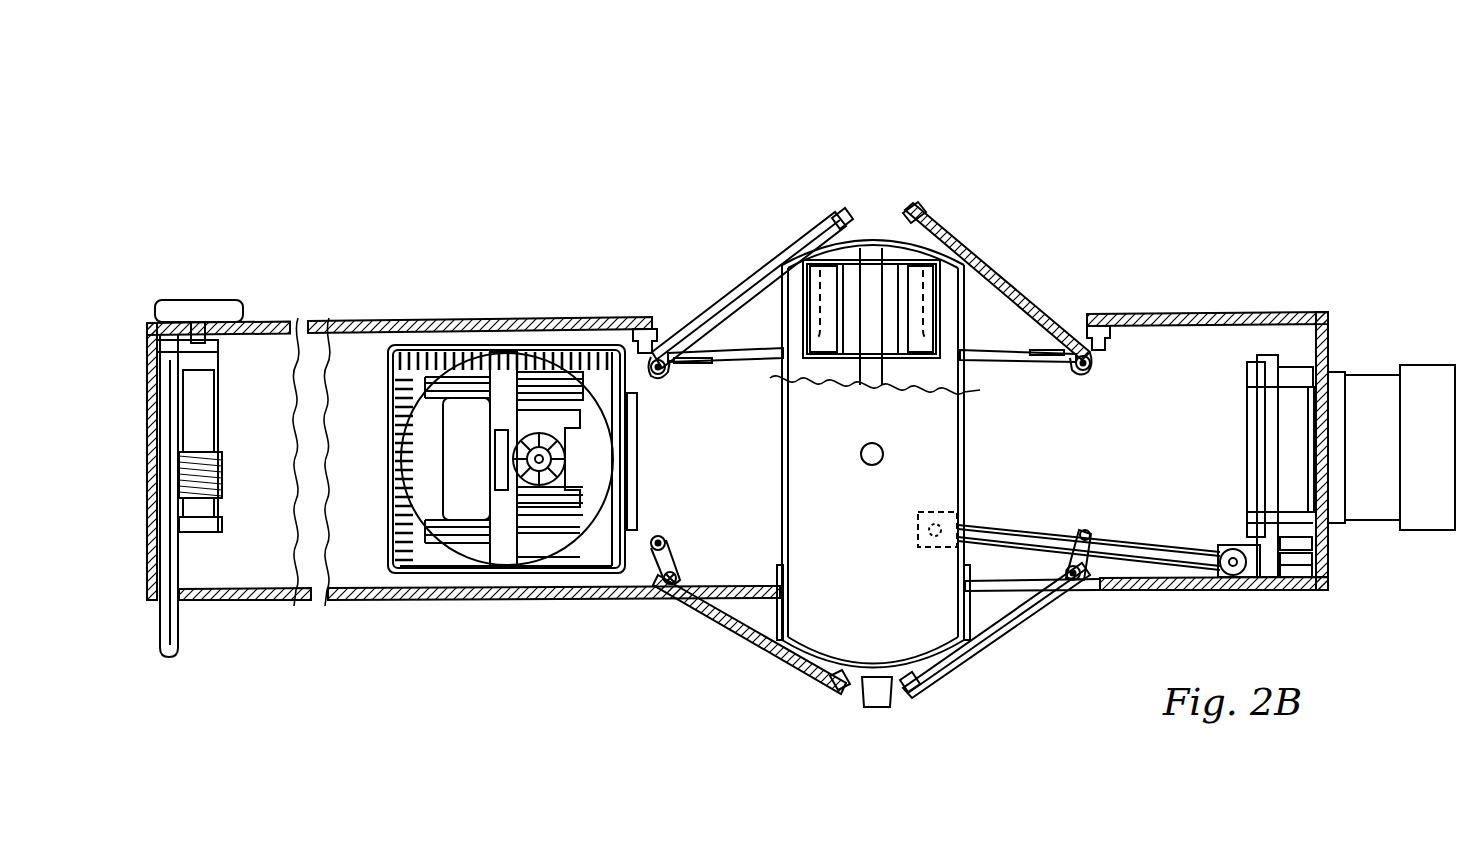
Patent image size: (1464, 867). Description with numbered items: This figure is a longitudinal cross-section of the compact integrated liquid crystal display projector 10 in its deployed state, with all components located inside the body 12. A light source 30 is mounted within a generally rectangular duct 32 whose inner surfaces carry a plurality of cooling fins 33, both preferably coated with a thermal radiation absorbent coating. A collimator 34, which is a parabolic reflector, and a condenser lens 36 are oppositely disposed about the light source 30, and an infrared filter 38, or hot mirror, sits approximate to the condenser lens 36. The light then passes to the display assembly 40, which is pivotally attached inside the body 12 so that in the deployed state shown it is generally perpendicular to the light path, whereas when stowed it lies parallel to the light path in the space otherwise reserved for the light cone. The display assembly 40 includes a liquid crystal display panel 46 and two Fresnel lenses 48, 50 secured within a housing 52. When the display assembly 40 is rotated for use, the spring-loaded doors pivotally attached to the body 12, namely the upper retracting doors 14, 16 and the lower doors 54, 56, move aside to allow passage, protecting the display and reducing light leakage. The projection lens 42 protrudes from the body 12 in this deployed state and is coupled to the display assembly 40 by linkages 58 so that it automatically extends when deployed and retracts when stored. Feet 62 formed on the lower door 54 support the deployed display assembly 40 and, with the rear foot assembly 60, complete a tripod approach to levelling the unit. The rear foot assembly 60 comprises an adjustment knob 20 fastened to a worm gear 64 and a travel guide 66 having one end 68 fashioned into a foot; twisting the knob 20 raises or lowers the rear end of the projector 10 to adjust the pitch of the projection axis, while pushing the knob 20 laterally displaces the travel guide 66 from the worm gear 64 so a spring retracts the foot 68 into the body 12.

The compact integrated liquid crystal display projector 10 is at (446, 260).
The body 12 is at (387, 322).
The upper retracting door 14 is at (729, 290).
The upper retracting door 16 is at (1010, 284).
The rear foot adjustment knob 20 is at (198, 300).
The light source 30 is at (500, 432).
The generally rectangular duct 32 is at (388, 435).
The cooling fins 33 is at (430, 575).
The collimator 34 is at (470, 471).
The condenser lens 36 is at (612, 574).
The infrared filter 38 is at (638, 422).
The display assembly 40 is at (982, 471).
The projection lens 42 is at (1388, 458).
The liquid crystal display panel 46 is at (872, 372).
The Fresnel lens 48 is at (783, 358).
The Fresnel lens 50 is at (960, 363).
The housing 52 is at (852, 539).
The lower door 54 is at (742, 645).
The lower door 56 is at (1012, 640).
The linkages 58 is at (1268, 478).
The rear foot assembly 60 is at (234, 428).
The feet 62 is at (882, 686).
The worm gear 64 is at (224, 482).
The travel guide 66 is at (167, 550).
The foot 68 is at (172, 664).